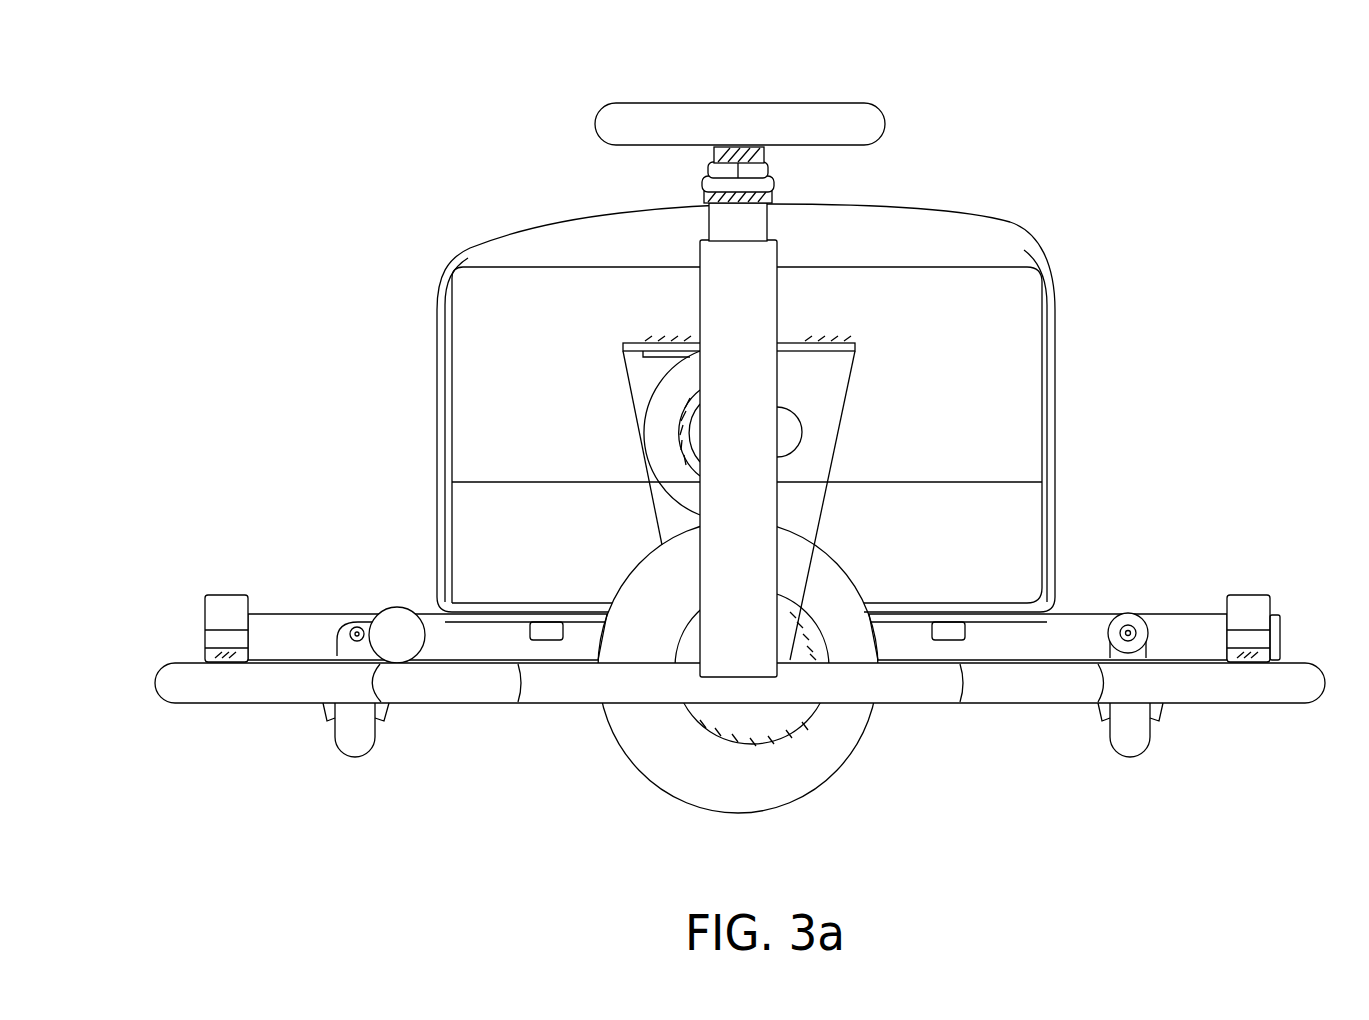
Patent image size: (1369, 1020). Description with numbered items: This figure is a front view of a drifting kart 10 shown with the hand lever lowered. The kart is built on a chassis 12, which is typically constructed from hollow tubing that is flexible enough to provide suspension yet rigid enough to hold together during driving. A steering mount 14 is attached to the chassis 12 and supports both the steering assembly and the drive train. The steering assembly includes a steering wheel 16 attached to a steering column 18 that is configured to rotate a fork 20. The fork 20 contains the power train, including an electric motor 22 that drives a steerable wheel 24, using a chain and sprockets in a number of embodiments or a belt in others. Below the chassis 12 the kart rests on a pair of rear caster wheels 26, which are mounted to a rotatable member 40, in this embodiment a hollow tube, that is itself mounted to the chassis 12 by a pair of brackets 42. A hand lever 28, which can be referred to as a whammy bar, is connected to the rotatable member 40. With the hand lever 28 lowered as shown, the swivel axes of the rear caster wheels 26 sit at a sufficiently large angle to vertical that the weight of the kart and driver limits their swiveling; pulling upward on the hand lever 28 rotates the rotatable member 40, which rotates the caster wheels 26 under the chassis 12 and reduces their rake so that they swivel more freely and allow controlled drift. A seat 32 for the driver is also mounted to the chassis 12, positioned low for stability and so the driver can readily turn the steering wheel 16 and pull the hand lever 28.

The drifting kart 10 is at (256, 208).
The chassis 12 is at (1250, 690).
The steering mount 14 is at (742, 295).
The steering wheel 16 is at (880, 105).
The steering column 18 is at (727, 222).
The fork 20 is at (820, 372).
The electric motor 22 is at (662, 425).
The steerable wheel 24 is at (672, 762).
The rear caster wheels 26 is at (1138, 737).
The hand lever 28 is at (387, 610).
The seat 32 is at (1040, 258).
The rotatable member 40 is at (1178, 614).
The brackets 42 is at (236, 596).